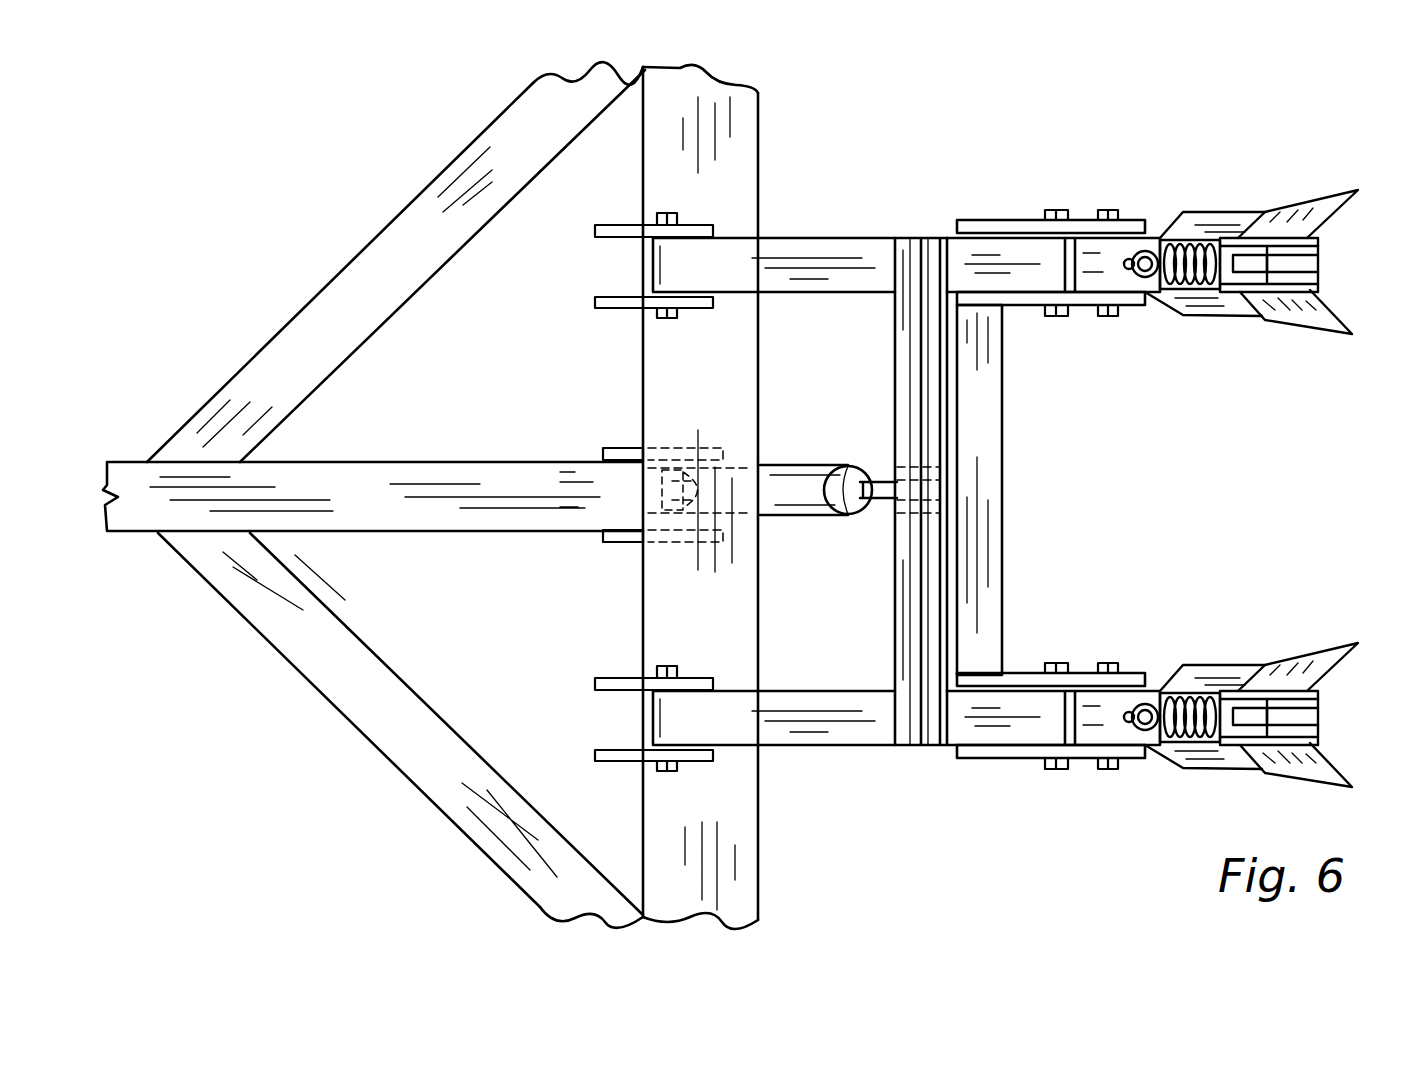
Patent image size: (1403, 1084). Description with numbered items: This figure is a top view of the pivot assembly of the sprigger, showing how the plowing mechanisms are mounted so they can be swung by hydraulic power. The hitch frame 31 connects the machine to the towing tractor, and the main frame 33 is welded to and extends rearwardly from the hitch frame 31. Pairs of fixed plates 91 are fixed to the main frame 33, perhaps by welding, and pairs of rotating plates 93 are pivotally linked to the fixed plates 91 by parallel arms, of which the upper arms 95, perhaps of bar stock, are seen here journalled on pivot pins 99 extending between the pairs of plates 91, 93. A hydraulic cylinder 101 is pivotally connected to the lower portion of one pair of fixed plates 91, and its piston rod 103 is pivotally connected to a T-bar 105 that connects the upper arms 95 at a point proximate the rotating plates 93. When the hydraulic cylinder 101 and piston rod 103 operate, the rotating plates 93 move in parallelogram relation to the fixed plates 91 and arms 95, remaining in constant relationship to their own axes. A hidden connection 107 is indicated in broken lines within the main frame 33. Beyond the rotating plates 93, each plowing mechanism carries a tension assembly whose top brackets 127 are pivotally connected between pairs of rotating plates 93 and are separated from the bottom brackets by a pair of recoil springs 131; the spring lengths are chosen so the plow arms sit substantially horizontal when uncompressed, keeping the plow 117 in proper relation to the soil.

The hitch frame 31 is at (320, 628).
The main frame 33 is at (737, 873).
The fixed plates 91 is at (603, 299).
The rotating plates 93 is at (998, 227).
The upper arms 95 is at (818, 255).
The pivot pins 99 is at (680, 223).
The hydraulic cylinder 101 is at (792, 488).
The piston rod 103 is at (878, 490).
The T-bar 105 is at (905, 400).
The hidden bracket 107 is at (675, 472).
The plow 117 is at (1307, 203).
The top brackets 127 is at (1115, 257).
The recoil springs 131 is at (1188, 237).